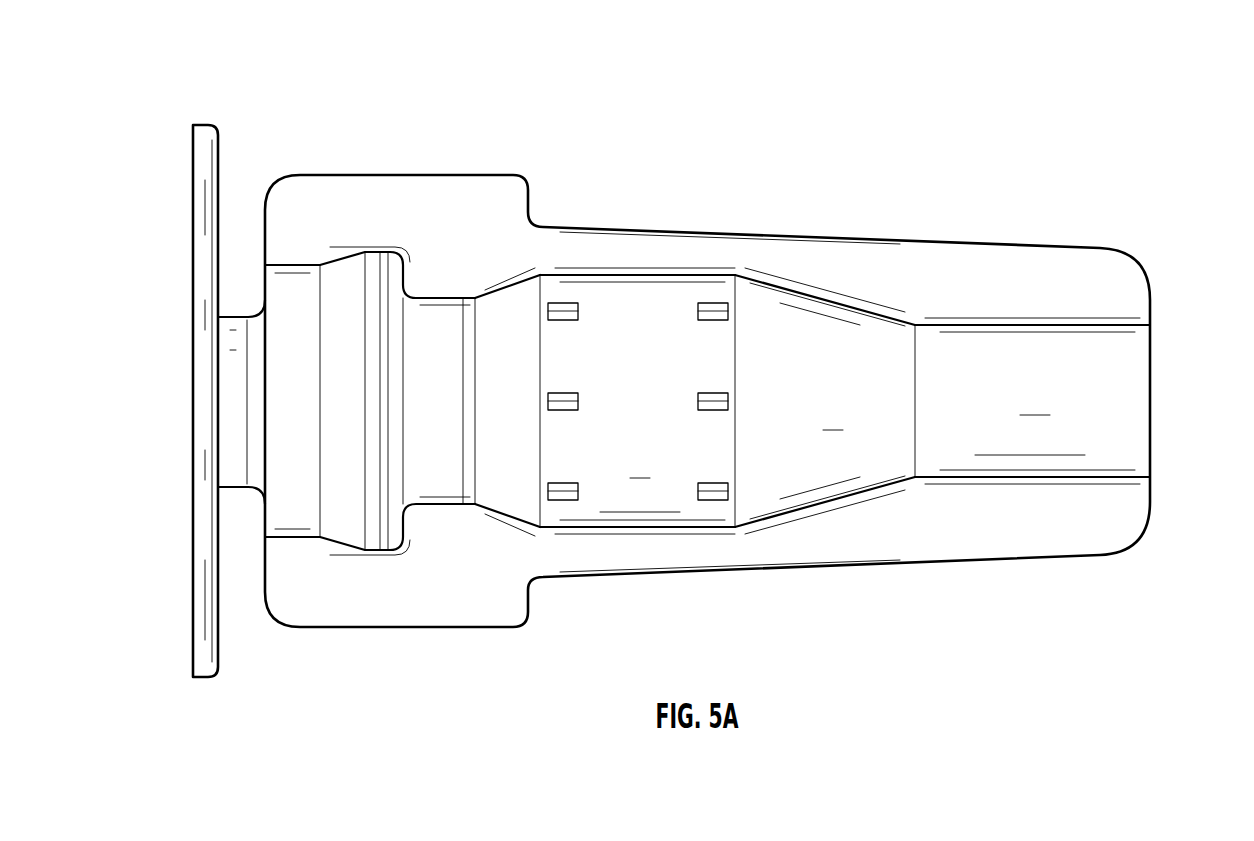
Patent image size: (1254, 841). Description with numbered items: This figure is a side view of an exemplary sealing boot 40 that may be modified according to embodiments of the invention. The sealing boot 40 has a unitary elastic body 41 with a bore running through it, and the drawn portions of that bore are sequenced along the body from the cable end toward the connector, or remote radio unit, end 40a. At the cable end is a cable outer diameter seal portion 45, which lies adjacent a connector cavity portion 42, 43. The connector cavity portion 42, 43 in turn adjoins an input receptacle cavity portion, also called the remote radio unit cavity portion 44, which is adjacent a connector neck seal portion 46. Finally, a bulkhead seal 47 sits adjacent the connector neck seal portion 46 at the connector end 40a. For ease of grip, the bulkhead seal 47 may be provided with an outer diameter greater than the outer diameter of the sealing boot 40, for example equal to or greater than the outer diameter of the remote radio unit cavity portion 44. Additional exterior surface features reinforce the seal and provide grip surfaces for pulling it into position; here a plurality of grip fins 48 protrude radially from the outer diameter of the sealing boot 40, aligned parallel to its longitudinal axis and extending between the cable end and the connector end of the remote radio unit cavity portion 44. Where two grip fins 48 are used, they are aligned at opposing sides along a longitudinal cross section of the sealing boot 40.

The sealing boot 40 is at (432, 40).
The connector end 40a is at (154, 395).
The unitary elastic body 41 is at (635, 295).
The connector cavity portion 42 is at (802, 327).
The connector cavity portion 43 is at (508, 473).
The remote radio unit cavity portion 44 is at (342, 278).
The cable outer diameter seal portion 45 is at (1060, 355).
The connector neck seal portion 46 is at (233, 325).
The bulkhead seal 47 is at (200, 208).
The grip fins 48 is at (937, 277).